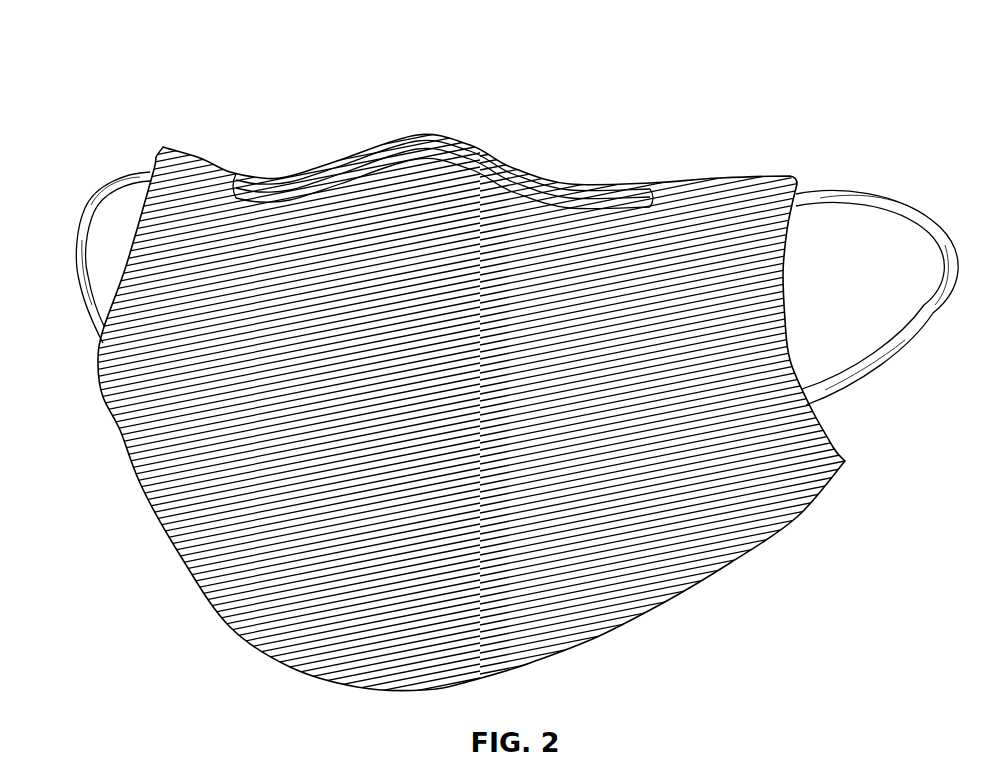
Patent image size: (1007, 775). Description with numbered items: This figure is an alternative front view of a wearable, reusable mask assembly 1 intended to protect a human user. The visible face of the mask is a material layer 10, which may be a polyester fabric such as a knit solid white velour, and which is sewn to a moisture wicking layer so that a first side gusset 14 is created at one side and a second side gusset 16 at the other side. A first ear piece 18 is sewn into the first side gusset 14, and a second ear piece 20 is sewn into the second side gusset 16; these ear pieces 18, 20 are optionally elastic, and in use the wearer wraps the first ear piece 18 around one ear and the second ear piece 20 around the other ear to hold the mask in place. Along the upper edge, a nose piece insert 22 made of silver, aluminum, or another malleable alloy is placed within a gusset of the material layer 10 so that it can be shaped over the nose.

The mask assembly 1 is at (112, 95).
The material layer 10 is at (379, 265).
The first side gusset 14 is at (208, 257).
The second side gusset 16 is at (738, 357).
The first ear piece 18 is at (135, 175).
The second ear piece 20 is at (833, 193).
The nose piece insert 22 is at (520, 187).